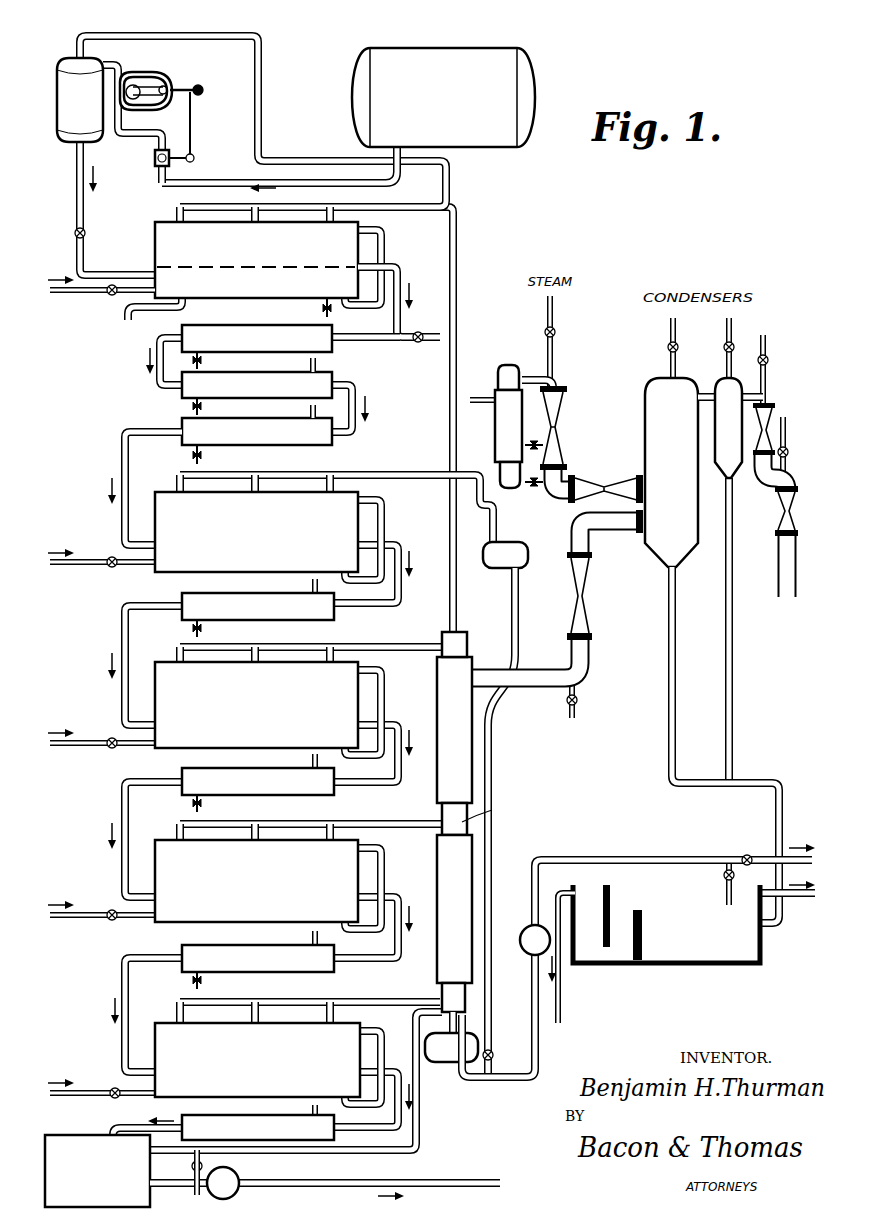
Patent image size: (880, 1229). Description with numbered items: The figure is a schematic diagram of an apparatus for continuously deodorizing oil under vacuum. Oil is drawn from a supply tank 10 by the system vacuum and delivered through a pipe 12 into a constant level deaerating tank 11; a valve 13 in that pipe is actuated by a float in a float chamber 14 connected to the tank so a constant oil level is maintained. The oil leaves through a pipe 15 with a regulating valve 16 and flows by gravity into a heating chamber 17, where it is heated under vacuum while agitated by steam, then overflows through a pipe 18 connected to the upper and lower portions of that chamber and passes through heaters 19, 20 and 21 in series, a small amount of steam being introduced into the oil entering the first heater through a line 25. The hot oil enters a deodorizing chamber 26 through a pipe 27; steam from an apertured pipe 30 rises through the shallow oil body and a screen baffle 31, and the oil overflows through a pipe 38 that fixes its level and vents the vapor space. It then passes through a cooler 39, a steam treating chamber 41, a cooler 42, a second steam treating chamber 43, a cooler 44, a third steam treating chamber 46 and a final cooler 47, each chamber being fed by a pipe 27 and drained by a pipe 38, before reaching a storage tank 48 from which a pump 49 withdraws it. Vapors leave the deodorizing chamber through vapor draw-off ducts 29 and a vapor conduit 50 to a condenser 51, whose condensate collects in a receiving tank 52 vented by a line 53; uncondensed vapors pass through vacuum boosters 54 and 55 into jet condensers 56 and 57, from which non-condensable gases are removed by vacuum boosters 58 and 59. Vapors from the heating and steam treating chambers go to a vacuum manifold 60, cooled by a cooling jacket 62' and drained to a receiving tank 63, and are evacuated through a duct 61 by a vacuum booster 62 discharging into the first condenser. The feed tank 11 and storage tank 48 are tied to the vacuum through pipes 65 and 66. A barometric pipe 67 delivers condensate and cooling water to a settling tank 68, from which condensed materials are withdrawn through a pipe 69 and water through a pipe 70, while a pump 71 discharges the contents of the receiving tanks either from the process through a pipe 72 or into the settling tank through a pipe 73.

The tank 10 is at (512, 74).
The constant level deaerating tank 11 is at (58, 78).
The pipe 12 is at (162, 183).
The valve 13 is at (155, 158).
The float chamber 14 is at (150, 80).
The pipe 15 is at (77, 212).
The regulating valve 16 is at (75, 236).
The heating chamber 17 is at (155, 245).
The pipe 18 is at (400, 276).
The heater 19 is at (334, 350).
The heater 20 is at (334, 378).
The heater 21 is at (326, 437).
The line 25 is at (421, 333).
The deodorizing chamber 26 is at (162, 492).
The pipe 27 is at (122, 528).
The vapor draw-off duct 29 is at (330, 202).
The pipe 30 is at (146, 566).
The baffle 31 is at (350, 265).
The pipe 38 is at (396, 553).
The cooler 39 is at (322, 618).
The steam treating chamber 41 is at (164, 665).
The cooler 42 is at (316, 793).
The steam treating chamber 43 is at (164, 876).
The cooler 44 is at (322, 967).
The steam treating chamber 46 is at (166, 1028).
The cooler 47 is at (322, 1130).
The storage tank 48 is at (100, 1148).
The pump 49 is at (241, 1190).
The vapor conduit 50 is at (436, 474).
The condenser 51 is at (496, 398).
The receiving tank 52 is at (504, 564).
The line 53 is at (482, 514).
The vacuum booster 54 is at (562, 413).
The vacuum booster 55 is at (585, 482).
The condenser 56 is at (648, 412).
The condenser 57 is at (716, 382).
The vacuum booster 58 is at (770, 410).
The vacuum booster 59 is at (778, 500).
The vacuum manifold 60 is at (462, 646).
The duct 61 is at (546, 694).
The vacuum booster 62 is at (548, 615).
The cooling jacket 62' is at (494, 811).
The receiving tank 63 is at (432, 1062).
The pipe 65 is at (258, 120).
The pipe 66 is at (420, 1124).
The pipe 67 is at (668, 666).
The settling tank 68 is at (760, 950).
The pipe 69 is at (778, 904).
The pipe 70 is at (564, 1014).
The pump 71 is at (523, 936).
The pipe 72 is at (782, 866).
The pipe 73 is at (724, 875).